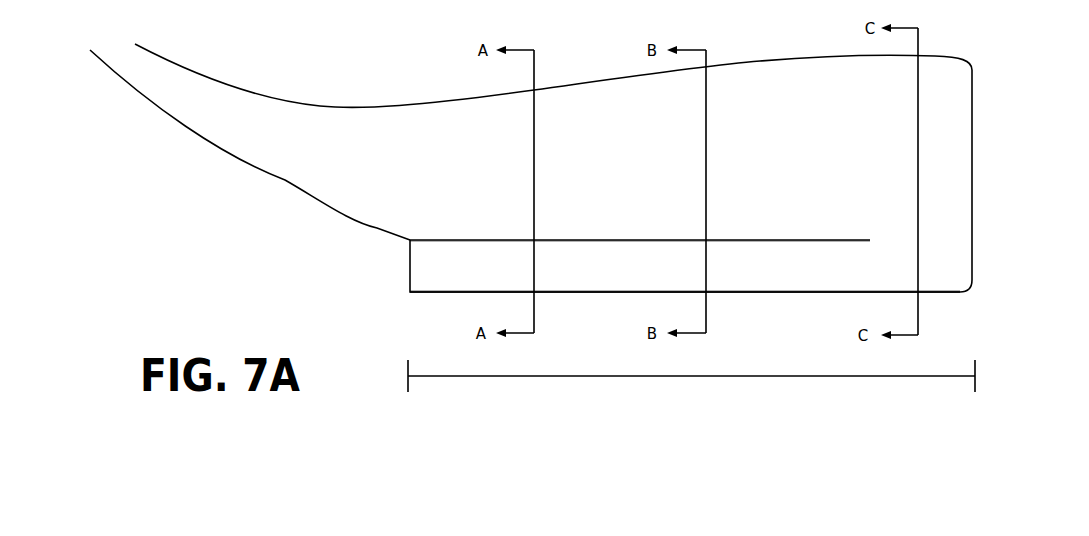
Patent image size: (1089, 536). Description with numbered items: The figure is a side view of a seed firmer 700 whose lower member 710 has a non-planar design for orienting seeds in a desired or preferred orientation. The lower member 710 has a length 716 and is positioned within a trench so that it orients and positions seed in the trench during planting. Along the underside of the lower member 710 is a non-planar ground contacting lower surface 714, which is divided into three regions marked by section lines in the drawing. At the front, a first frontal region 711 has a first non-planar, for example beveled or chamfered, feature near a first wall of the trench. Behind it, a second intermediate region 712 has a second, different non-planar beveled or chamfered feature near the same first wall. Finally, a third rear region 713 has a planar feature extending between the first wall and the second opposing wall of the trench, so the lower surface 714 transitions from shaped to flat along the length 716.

The seed firmer 700 is at (531, 161).
The lower member 710 is at (384, 268).
The first frontal region 711 is at (472, 266).
The second intermediate region 712 is at (620, 266).
The third rear region 713 is at (833, 261).
The non-planar ground contacting lower surface 714 is at (778, 306).
The length 716 is at (632, 378).